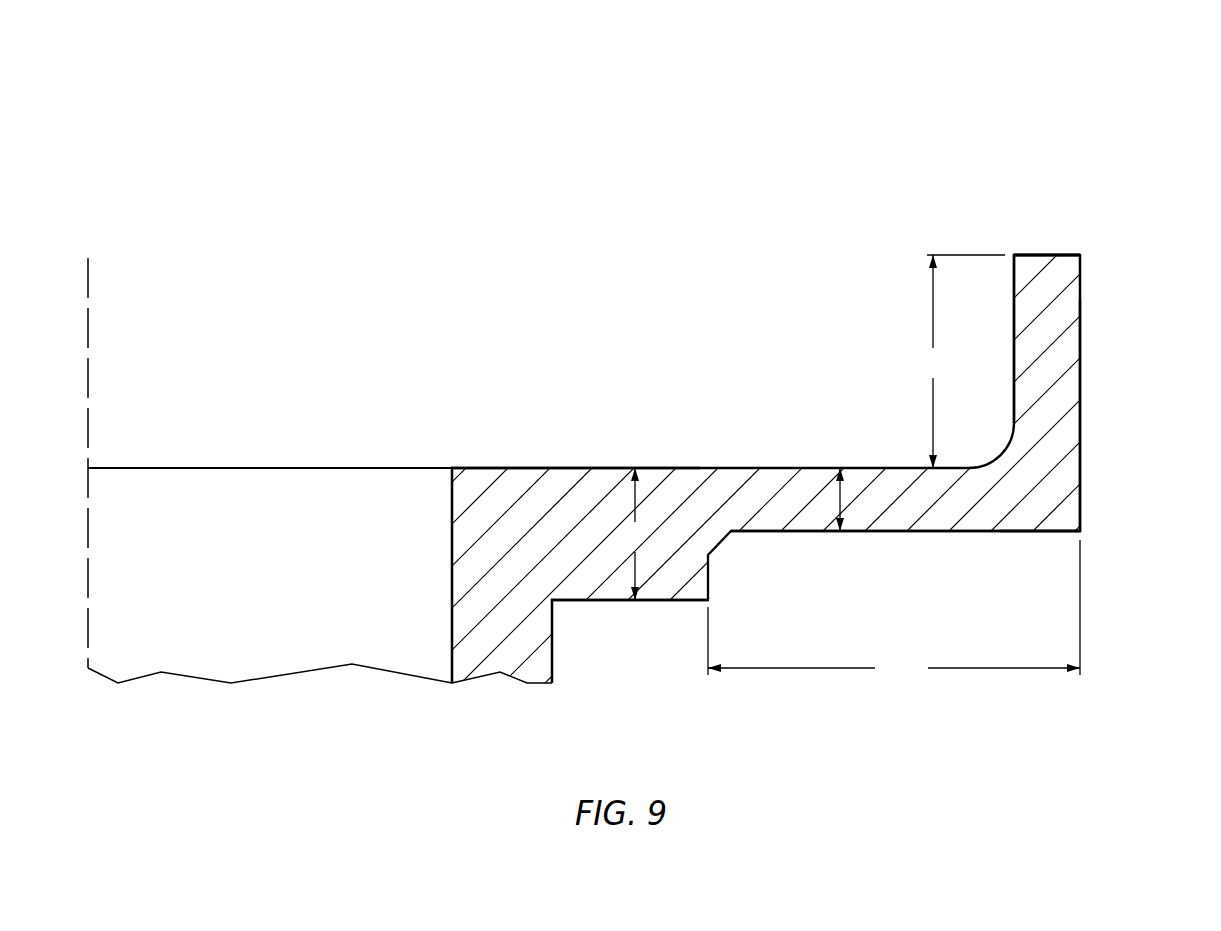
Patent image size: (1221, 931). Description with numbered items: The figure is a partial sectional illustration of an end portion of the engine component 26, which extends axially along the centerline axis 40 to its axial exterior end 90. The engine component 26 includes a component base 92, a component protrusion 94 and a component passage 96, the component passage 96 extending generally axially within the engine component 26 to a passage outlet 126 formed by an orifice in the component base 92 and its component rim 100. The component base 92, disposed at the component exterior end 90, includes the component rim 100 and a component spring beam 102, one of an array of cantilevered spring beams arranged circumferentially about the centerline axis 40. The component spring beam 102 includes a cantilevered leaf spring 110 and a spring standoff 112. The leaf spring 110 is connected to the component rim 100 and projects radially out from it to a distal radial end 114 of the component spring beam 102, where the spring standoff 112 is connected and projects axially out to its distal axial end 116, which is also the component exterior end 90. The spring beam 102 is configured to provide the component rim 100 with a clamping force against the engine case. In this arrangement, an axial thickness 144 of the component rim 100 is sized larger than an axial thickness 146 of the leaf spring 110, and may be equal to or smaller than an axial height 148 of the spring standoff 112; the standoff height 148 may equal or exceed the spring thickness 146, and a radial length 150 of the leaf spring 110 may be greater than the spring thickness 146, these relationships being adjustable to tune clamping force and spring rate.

The engine component 26 is at (1050, 110).
The centerline axis 40 is at (90, 651).
The axial exterior end 90 is at (1052, 255).
The component base 92 is at (1146, 259).
The component protrusion 94 is at (562, 664).
The component passage 96 is at (268, 598).
The component rim 100 is at (577, 540).
The component spring beam 102 is at (1099, 405).
The cantilevered leaf spring 110 is at (887, 507).
The spring standoff 112 is at (1047, 325).
The distal radial end 114 is at (1080, 507).
The distal axial end 116 is at (1052, 255).
The passage outlet 126 is at (213, 489).
The axial thickness of the component rim 144 is at (635, 534).
The axial thickness of the leaf spring 146 is at (838, 500).
The axial height of the spring standoff 148 is at (960, 361).
The radial length of the leaf spring 150 is at (894, 611).